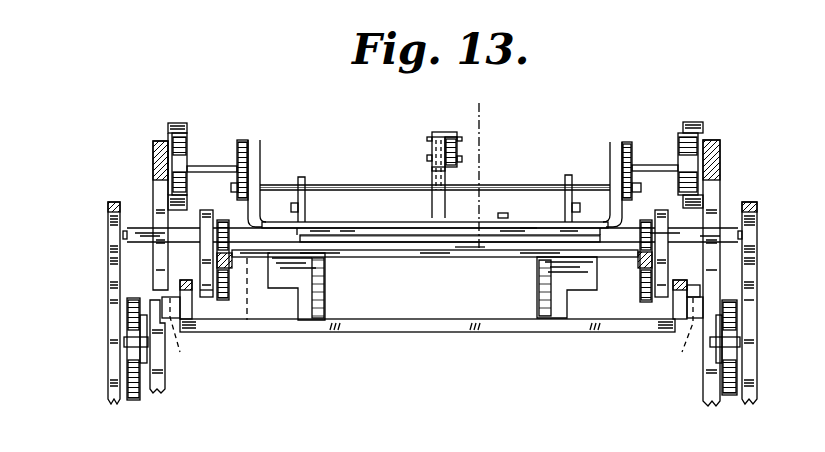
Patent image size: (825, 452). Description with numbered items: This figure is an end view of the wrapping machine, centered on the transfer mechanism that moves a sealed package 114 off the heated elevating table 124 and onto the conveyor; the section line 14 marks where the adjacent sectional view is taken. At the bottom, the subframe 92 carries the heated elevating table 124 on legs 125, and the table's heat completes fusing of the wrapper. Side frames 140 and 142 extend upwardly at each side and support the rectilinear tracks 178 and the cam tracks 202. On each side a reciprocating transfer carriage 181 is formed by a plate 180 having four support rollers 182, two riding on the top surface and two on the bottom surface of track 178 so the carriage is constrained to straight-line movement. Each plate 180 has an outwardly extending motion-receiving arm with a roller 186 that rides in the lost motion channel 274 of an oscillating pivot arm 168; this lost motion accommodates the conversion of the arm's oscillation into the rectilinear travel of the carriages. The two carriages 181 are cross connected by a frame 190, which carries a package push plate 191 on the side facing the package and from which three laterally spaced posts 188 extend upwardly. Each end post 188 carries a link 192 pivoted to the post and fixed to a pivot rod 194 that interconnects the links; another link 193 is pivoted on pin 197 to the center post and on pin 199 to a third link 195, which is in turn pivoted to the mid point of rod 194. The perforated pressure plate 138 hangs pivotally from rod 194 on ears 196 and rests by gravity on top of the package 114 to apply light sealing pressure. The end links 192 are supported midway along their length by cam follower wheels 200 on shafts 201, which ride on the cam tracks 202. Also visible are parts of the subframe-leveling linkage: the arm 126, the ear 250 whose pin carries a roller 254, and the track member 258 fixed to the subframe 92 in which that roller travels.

The section line 14 is at (488, 116).
The subframe 92 is at (460, 330).
The wrapped package 114 is at (537, 228).
The heated elevating table 124 is at (465, 243).
The legs 125 is at (325, 307).
The arm 126 is at (133, 401).
The perforated pressure plate 138 is at (527, 222).
The side frame 140 is at (720, 172).
The side frame 142 is at (152, 160).
The oscillating pivot arm 168 is at (113, 327).
The rectilinear track 178 is at (232, 262).
The plate 180 is at (204, 249).
The transfer carriage 181 is at (207, 298).
The support roller 182 is at (226, 216).
The roller 186 is at (115, 233).
The post 188 is at (252, 203).
The frame 190 is at (385, 233).
The package push plate 191 is at (468, 248).
The link 192 is at (246, 160).
The link 193 is at (458, 152).
The pivot rod 194 is at (505, 186).
The third link 195 is at (432, 169).
The ear 196 is at (306, 220).
The pin 197 is at (433, 133).
The pin 199 is at (429, 157).
The cam follower wheel 200 is at (186, 150).
The shaft 201 is at (214, 166).
The cam track 202 is at (179, 122).
The ear 250 is at (148, 326).
The roller 254 is at (152, 325).
The track member 258 is at (178, 316).
The lost motion channel 274 is at (113, 253).